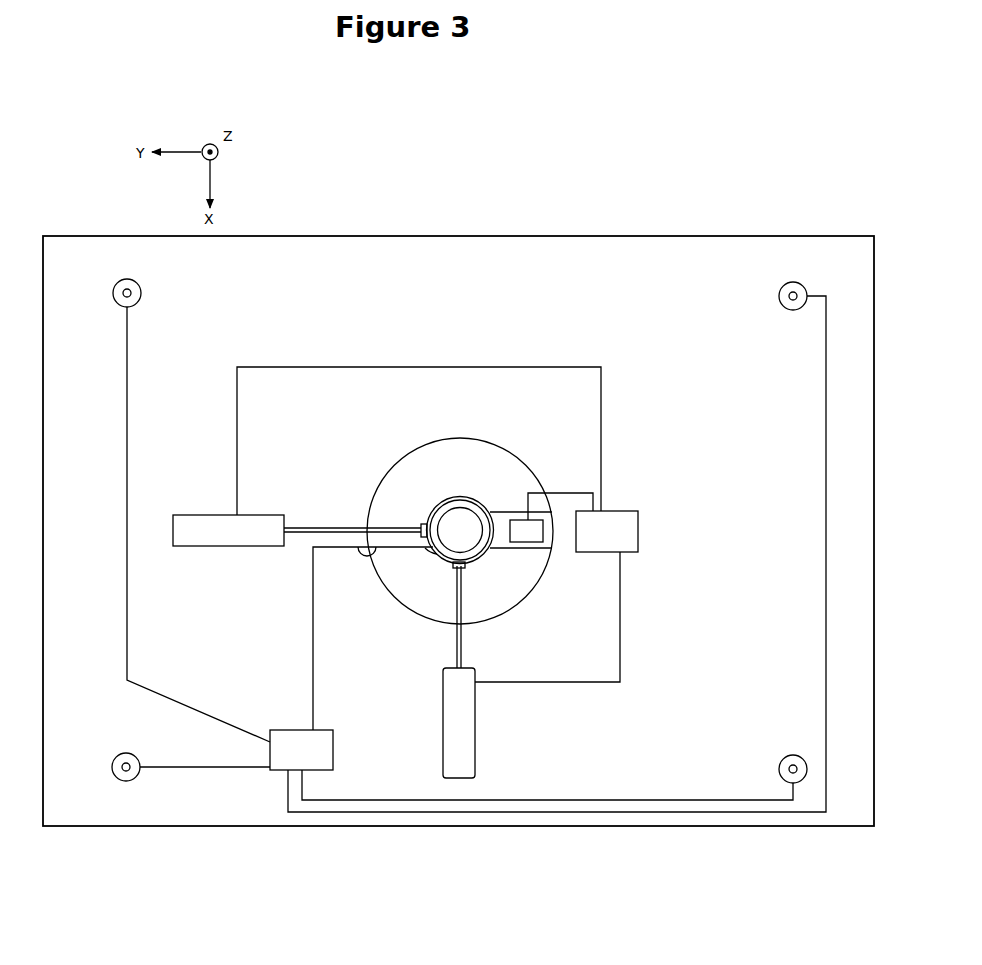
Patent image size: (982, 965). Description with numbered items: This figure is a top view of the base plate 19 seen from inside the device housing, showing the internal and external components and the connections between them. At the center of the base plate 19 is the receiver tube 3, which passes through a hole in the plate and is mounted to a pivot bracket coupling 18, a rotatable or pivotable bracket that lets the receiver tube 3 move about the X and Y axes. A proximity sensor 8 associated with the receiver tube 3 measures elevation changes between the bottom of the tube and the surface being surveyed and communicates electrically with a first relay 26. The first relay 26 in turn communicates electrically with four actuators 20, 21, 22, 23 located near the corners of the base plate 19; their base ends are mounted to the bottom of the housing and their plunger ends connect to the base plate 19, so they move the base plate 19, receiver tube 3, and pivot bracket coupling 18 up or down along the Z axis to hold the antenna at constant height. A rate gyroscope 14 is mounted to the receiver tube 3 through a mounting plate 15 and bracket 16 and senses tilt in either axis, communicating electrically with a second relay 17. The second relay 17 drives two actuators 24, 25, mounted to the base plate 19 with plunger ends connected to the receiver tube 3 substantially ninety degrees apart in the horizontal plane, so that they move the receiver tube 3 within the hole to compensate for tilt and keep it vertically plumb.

The receiver tube 3 is at (487, 495).
The proximity sensor 8 is at (436, 514).
The rate gyroscope 14 is at (531, 546).
The mounting plate 15 is at (506, 554).
The bracket 16 is at (431, 559).
The second relay 17 is at (613, 508).
The pivot bracket coupling 18 is at (413, 446).
The base plate 19 is at (118, 233).
The actuator 20 is at (136, 755).
The actuator 21 is at (142, 290).
The actuator 22 is at (785, 751).
The actuator 23 is at (779, 291).
The actuator 24 is at (229, 513).
The actuator 25 is at (478, 722).
The first relay 26 is at (292, 728).